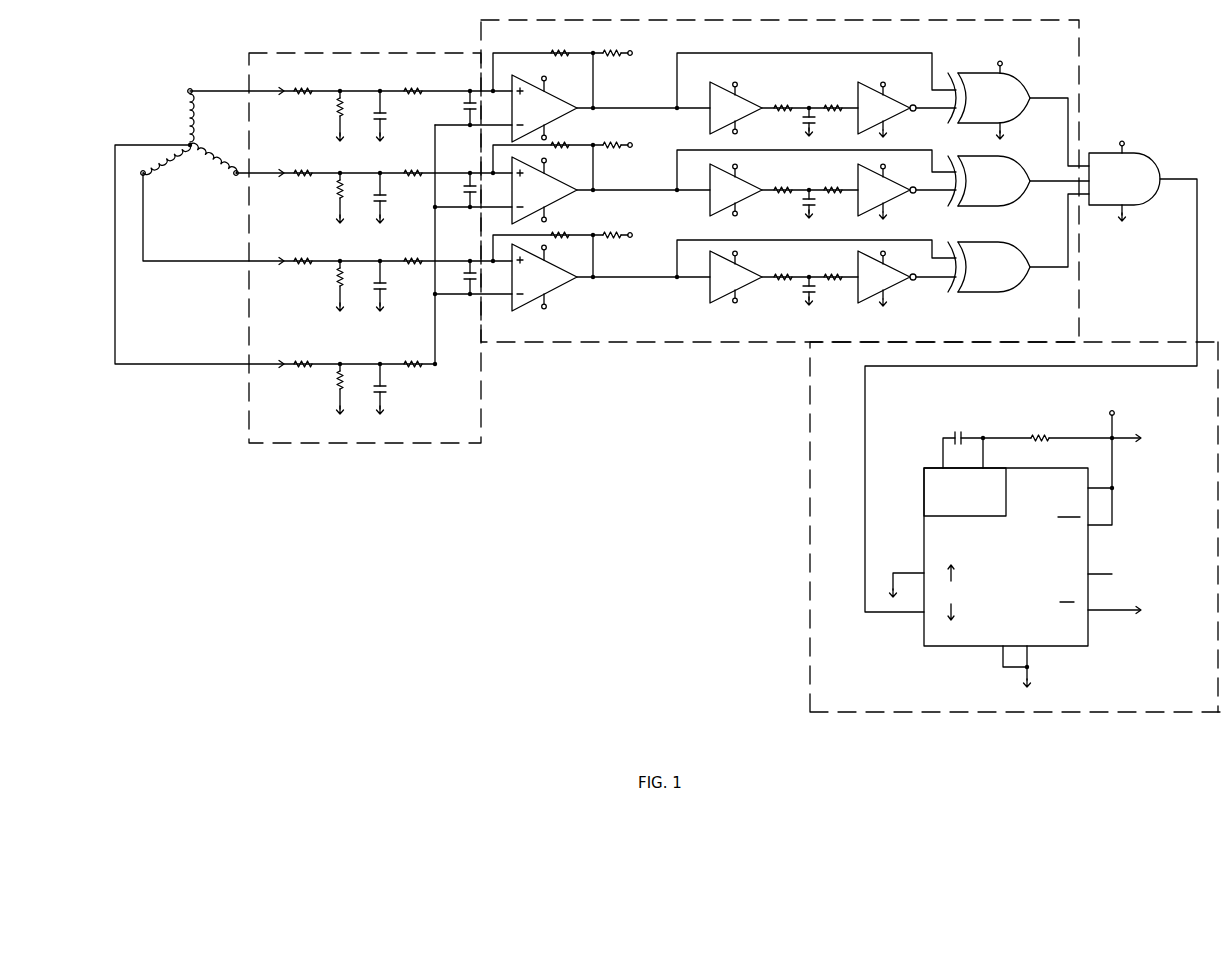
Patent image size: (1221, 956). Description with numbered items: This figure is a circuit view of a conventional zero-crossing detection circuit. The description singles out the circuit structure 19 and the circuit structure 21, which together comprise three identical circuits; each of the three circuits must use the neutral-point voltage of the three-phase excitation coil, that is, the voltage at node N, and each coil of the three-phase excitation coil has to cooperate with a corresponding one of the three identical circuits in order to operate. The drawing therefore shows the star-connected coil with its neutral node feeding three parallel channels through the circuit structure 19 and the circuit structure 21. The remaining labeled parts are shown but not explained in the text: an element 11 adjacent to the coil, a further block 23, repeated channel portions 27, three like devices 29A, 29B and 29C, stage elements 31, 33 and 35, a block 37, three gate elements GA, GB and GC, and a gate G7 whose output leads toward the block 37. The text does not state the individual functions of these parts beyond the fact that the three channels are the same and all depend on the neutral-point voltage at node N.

The three-phase motor windings 11 is at (165, 131).
The circuit structure 19 is at (484, 407).
The circuit structure 21 is at (676, 345).
The latch circuit 23 is at (808, 455).
The RC filter channel 27 is at (280, 120).
The comparator A 29A is at (572, 98).
The comparator B 29B is at (572, 180).
The comparator C 29C is at (572, 267).
The delay stage 31 is at (817, 192).
The buffer 33 is at (746, 122).
The inverter 35 is at (896, 122).
The flip-flop 37 is at (924, 492).
The exclusive-OR gate A GA is at (989, 100).
The exclusive-OR gate B GB is at (989, 181).
The exclusive-OR gate C GC is at (989, 267).
The AND gate G7 is at (1140, 206).